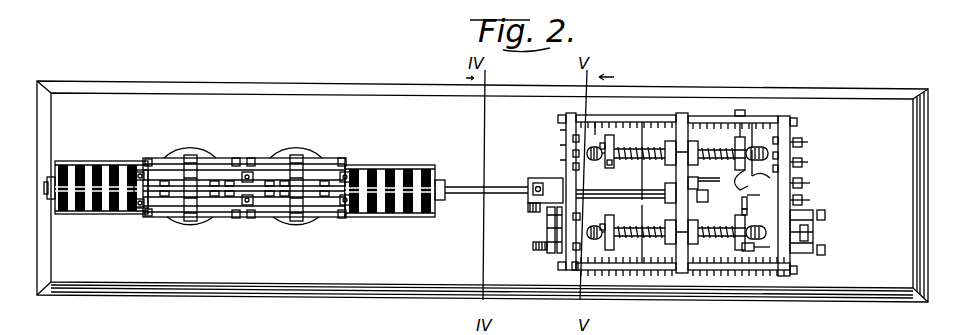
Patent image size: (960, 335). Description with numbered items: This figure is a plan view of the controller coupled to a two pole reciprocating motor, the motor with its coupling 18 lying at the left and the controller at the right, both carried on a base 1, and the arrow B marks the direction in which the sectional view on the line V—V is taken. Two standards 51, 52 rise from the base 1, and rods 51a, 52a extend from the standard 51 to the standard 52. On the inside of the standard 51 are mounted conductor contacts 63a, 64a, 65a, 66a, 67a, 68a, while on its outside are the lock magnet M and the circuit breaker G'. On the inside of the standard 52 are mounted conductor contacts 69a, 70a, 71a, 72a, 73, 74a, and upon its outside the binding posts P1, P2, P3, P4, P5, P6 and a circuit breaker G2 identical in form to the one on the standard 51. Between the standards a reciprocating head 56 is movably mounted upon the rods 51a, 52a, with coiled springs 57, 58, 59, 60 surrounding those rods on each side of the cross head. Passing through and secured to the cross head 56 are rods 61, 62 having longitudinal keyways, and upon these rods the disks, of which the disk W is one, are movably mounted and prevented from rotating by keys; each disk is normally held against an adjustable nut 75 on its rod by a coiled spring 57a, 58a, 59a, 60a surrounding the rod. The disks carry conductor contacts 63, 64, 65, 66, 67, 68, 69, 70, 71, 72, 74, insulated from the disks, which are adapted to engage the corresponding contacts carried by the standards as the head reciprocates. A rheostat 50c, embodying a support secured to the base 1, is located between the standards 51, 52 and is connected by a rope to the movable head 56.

The base 1 is at (383, 272).
The coupling hub 18 is at (200, 173).
The lock magnet M is at (538, 195).
The disk W is at (611, 170).
The arrow B is at (608, 69).
The circuit breaker G' is at (544, 228).
The circuit breaker G2 is at (828, 240).
The binding post P1 is at (808, 142).
The binding post P2 is at (810, 162).
The binding post P3 is at (811, 180).
The binding post P4 is at (811, 198).
The binding post P5 is at (815, 212).
The binding post P6 is at (815, 240).
The rheostat 50c is at (657, 116).
The standard 51 is at (535, 191).
The rod 51a is at (656, 274).
The standard 52 is at (784, 117).
The rod 52a is at (722, 116).
The reciprocating head 56 is at (680, 116).
The coiled spring 57 is at (622, 117).
The coiled spring 57a is at (657, 133).
The coiled spring 58 is at (758, 117).
The coiled spring 58a is at (710, 148).
The coiled spring 59 is at (612, 272).
The coiled spring 59a is at (633, 227).
The coiled spring 60 is at (712, 273).
The coiled spring 60a is at (717, 223).
The rod 61 is at (732, 226).
The rod 62 is at (714, 162).
The conductor contact 63 is at (605, 113).
The conductor contact 63a is at (572, 137).
The conductor contact 64 is at (596, 154).
The conductor contact 64a is at (572, 153).
The conductor contact 65 is at (593, 168).
The conductor contact 65a is at (572, 166).
The conductor contact 66 is at (606, 226).
The conductor contact 66a is at (573, 216).
The conductor contact 67 is at (600, 228).
The conductor contact 67a is at (573, 232).
The conductor contact 68 is at (602, 242).
The conductor contact 68a is at (573, 247).
The conductor contact 69 is at (740, 107).
The conductor contact 69a is at (790, 140).
The conductor contact 70 is at (741, 184).
The conductor contact 70a is at (830, 143).
The conductor contact 71 is at (758, 166).
The conductor contact 71a is at (767, 182).
The conductor contact 72 is at (750, 201).
The conductor contact 72a is at (762, 199).
The conductor contact 73 is at (754, 214).
The conductor contact 74 is at (753, 249).
The conductor contact 74a is at (768, 253).
The adjustable nut 75 is at (827, 262).